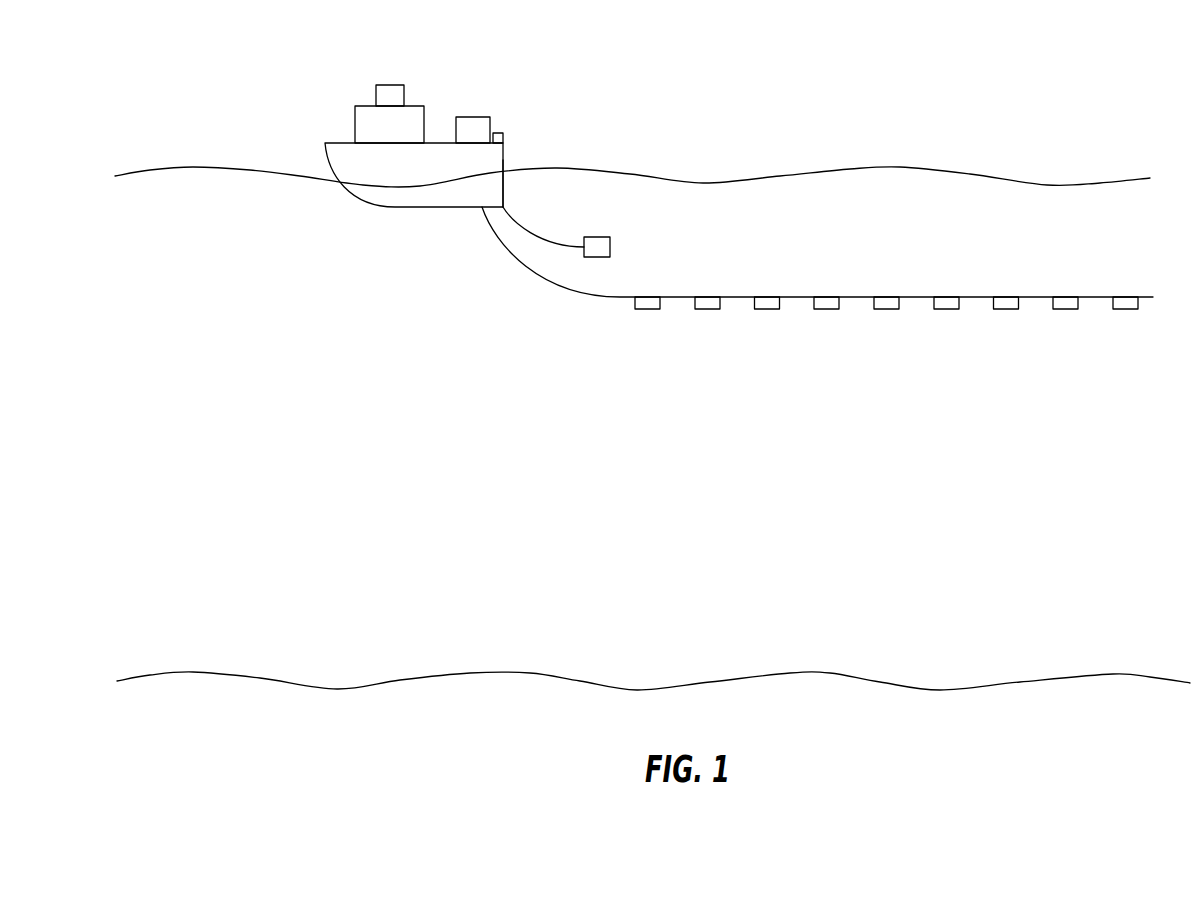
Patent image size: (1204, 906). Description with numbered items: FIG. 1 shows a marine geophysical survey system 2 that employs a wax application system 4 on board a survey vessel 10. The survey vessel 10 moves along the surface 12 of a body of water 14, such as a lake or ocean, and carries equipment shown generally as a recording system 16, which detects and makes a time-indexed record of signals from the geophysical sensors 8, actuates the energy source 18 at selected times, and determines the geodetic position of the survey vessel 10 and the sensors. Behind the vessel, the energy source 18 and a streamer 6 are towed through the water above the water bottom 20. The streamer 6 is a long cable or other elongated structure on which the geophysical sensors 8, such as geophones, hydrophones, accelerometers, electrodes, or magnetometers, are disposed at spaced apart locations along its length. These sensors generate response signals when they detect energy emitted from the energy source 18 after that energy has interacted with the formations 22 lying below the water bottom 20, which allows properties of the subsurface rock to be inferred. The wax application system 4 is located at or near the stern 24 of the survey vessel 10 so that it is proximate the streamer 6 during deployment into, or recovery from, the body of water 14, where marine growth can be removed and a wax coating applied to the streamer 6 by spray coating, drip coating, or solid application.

The marine geophysical survey system 2 is at (341, 232).
The wax application system 4 is at (498, 130).
The streamer 6 is at (793, 297).
The geophysical sensors 8 is at (648, 309).
The survey vessel 10 is at (365, 105).
The surface 12 is at (160, 168).
The body of water 14 is at (358, 392).
The recording system 16 is at (472, 117).
The energy source 18 is at (610, 247).
The water bottom 20 is at (1092, 673).
The formations 22 is at (1033, 742).
The stern 24 is at (505, 158).